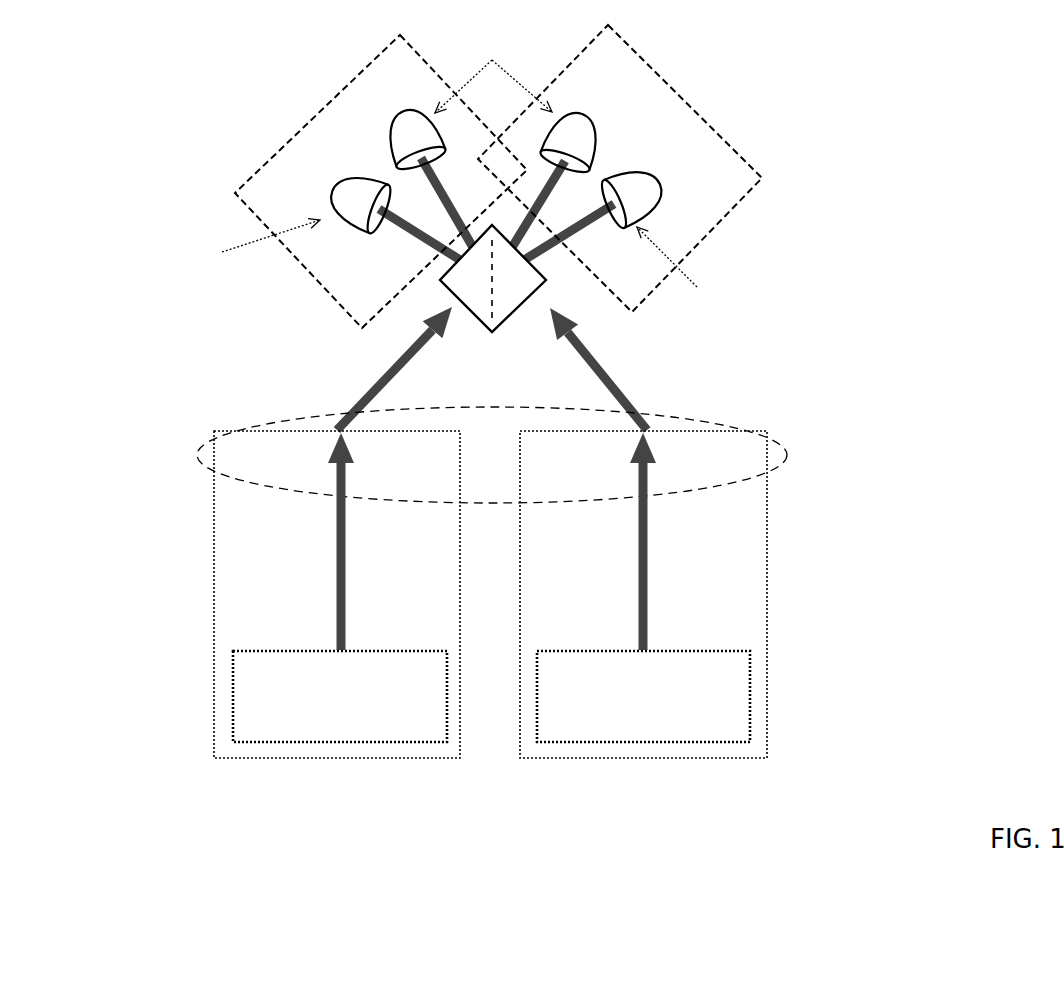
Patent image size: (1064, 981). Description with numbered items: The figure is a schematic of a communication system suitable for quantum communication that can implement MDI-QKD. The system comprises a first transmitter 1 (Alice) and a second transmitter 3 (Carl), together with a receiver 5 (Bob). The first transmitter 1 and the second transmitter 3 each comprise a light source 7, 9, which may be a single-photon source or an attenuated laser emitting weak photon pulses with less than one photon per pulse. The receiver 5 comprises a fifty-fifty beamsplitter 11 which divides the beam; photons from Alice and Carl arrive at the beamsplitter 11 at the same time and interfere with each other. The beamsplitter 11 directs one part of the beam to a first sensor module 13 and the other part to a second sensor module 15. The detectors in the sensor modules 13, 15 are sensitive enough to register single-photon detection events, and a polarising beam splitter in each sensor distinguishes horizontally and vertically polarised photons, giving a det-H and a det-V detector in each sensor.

The first transmitter 1 is at (210, 596).
The second transmitter 3 is at (772, 597).
The receiver 5 is at (788, 240).
The light source 7 is at (233, 698).
The light source 9 is at (752, 700).
The beamsplitter 11 is at (436, 280).
The first sensor module 13 is at (255, 160).
The second sensor module 15 is at (715, 115).